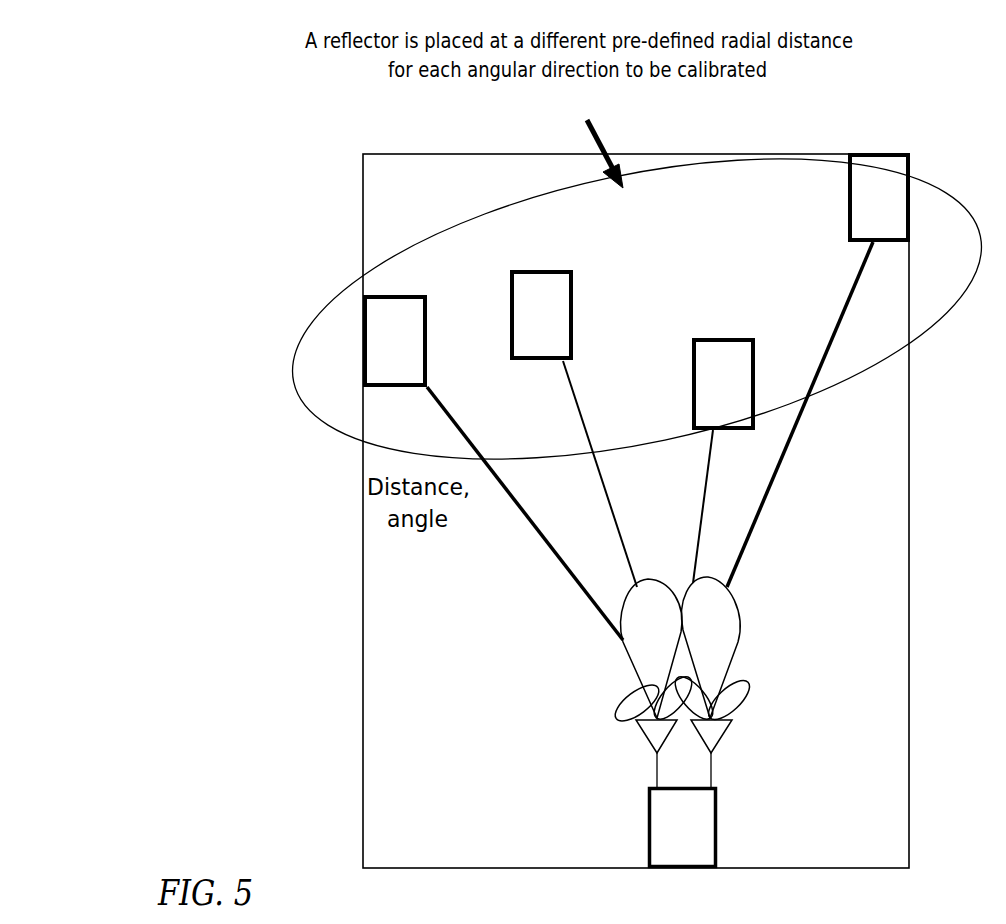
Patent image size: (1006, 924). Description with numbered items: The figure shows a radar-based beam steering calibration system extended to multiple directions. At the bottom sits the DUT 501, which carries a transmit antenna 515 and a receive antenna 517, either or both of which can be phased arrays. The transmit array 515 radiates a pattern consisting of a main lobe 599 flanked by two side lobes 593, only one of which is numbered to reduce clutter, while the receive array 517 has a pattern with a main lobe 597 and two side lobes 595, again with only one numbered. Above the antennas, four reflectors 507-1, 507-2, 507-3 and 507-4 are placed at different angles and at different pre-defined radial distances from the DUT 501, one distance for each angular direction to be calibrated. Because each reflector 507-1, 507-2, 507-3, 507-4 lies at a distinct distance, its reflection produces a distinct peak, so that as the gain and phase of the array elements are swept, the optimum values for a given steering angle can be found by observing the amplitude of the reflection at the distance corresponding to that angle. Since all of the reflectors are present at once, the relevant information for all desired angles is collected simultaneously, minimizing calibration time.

The DUT 501 is at (647, 833).
The reflector 507-1 is at (363, 308).
The reflector 507-2 is at (507, 277).
The reflector 507-3 is at (707, 336).
The reflector 507-4 is at (848, 212).
The transmit antenna 515 is at (643, 732).
The receive antenna 517 is at (727, 732).
The side lobe 593 is at (615, 691).
The side lobe 595 is at (748, 687).
The main lobe 597 is at (732, 643).
The main lobe 599 is at (669, 643).